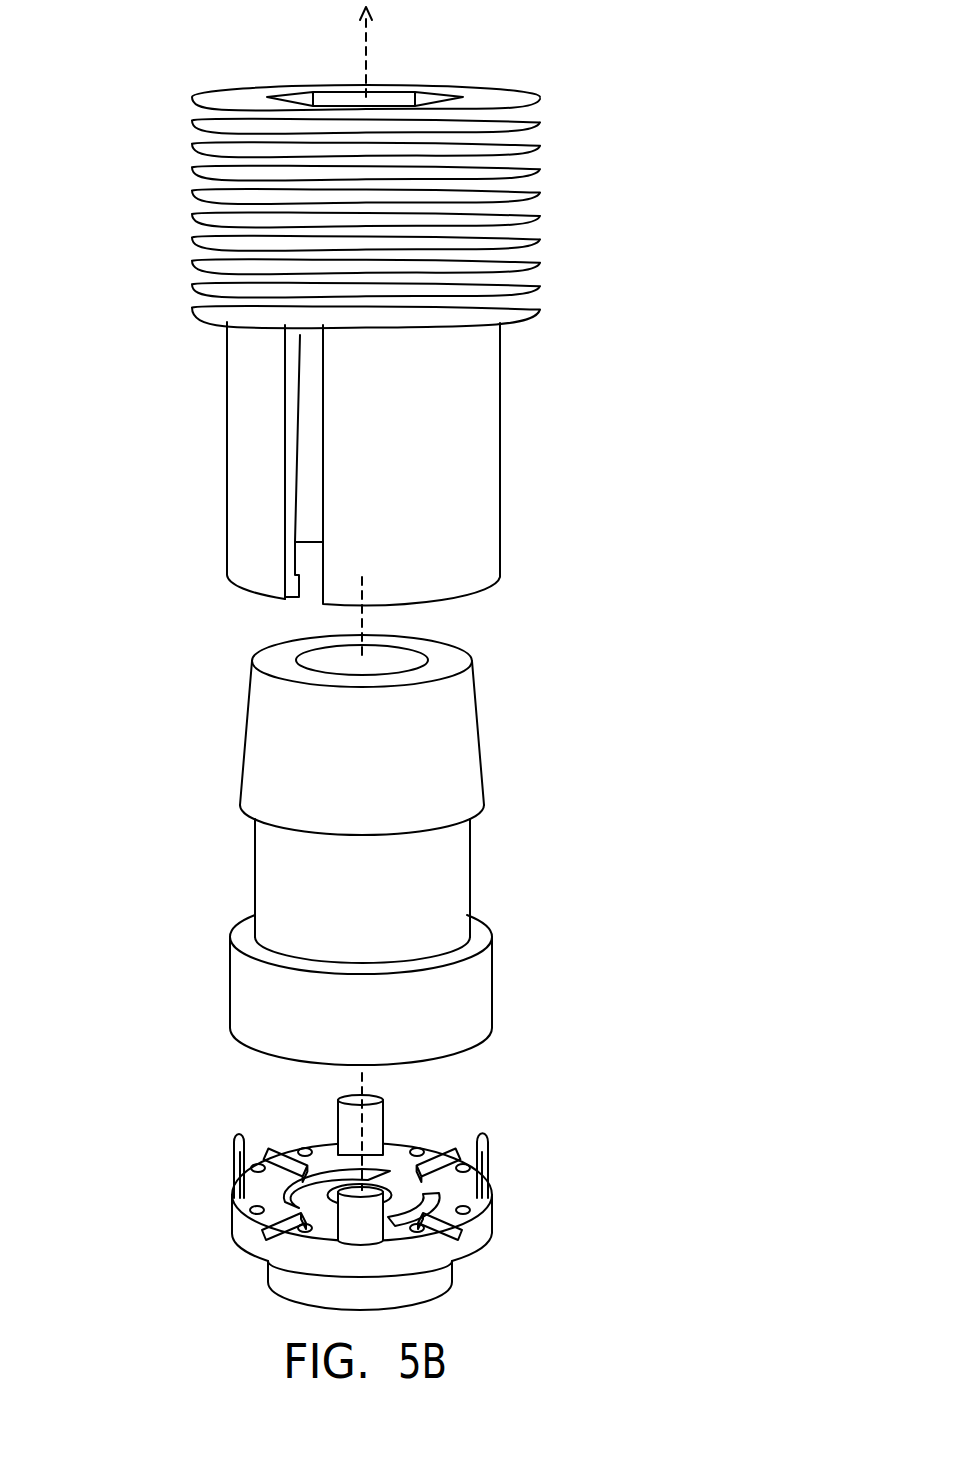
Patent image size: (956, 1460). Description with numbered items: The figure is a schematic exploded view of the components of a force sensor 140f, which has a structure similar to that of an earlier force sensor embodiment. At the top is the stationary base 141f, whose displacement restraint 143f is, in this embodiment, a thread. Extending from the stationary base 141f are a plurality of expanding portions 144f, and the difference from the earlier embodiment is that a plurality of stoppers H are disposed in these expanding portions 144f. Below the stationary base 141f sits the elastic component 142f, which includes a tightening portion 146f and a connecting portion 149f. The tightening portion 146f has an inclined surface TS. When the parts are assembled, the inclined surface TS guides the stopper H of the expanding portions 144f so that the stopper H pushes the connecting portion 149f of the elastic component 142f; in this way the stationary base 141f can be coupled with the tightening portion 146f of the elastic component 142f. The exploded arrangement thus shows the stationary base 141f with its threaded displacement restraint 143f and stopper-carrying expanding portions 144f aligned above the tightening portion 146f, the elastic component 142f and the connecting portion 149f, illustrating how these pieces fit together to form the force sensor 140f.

The force sensor 140f is at (679, 1292).
The stationary base 141f is at (186, 144).
The displacement restraint 143f is at (222, 247).
The expanding portions 144f is at (494, 398).
The stopper H is at (294, 586).
The tightening portion 146f is at (458, 712).
The inclined surface TS is at (258, 729).
The elastic component 142f is at (448, 867).
The connecting portion 149f is at (487, 992).